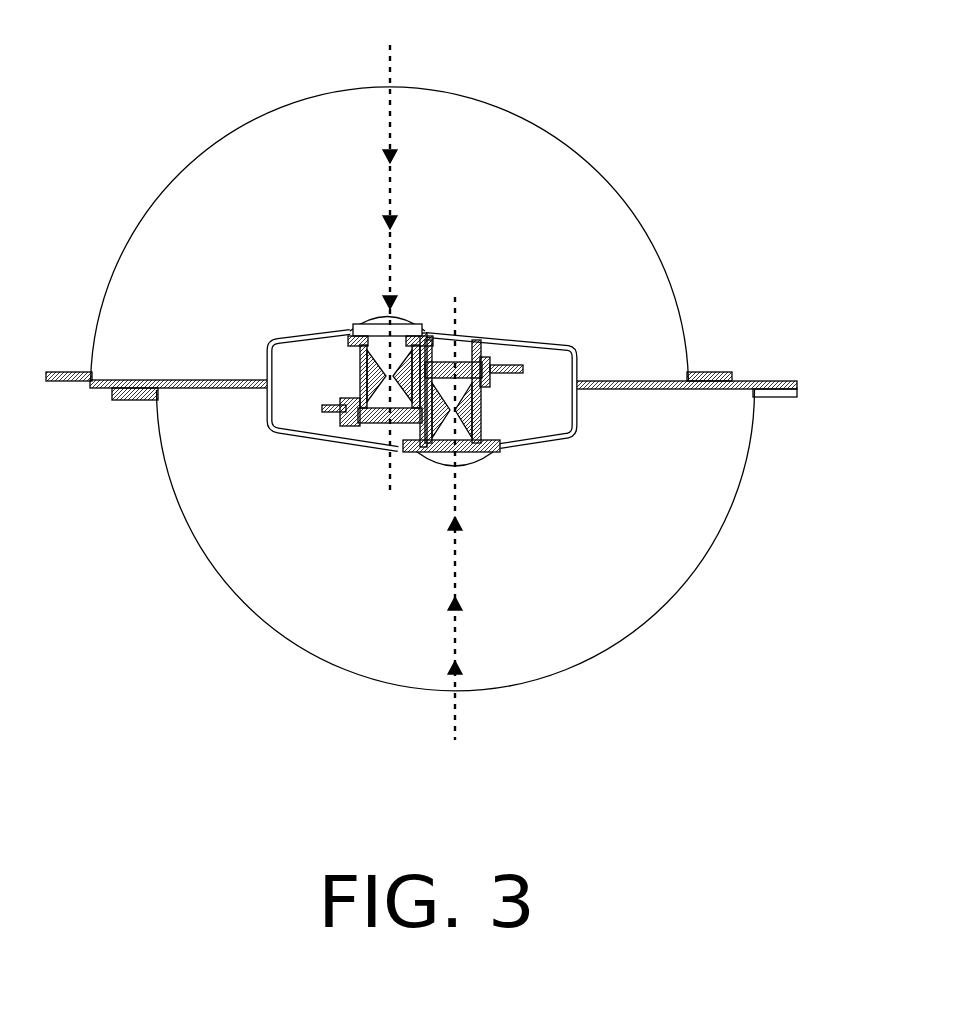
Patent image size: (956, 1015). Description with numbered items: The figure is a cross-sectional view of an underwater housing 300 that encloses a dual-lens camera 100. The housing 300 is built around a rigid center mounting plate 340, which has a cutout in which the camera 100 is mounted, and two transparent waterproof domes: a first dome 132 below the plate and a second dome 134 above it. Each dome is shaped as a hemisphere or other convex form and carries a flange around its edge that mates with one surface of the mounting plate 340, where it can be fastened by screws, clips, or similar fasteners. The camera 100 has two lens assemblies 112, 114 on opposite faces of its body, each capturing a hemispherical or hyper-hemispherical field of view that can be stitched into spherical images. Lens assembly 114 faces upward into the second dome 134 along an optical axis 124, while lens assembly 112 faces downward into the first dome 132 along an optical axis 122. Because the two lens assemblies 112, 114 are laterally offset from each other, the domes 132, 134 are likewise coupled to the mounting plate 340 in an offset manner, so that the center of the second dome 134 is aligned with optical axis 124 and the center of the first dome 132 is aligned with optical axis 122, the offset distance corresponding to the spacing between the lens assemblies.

The underwater housing 300 is at (182, 88).
The second dome 134 is at (181, 172).
The first dome 132 is at (243, 596).
The mounting plate 340 is at (232, 379).
The dual-lens camera 100 is at (260, 327).
The lens assembly 114 is at (352, 332).
The lens assembly 112 is at (503, 462).
The optical axis 124 is at (388, 273).
The optical axis 122 is at (456, 566).